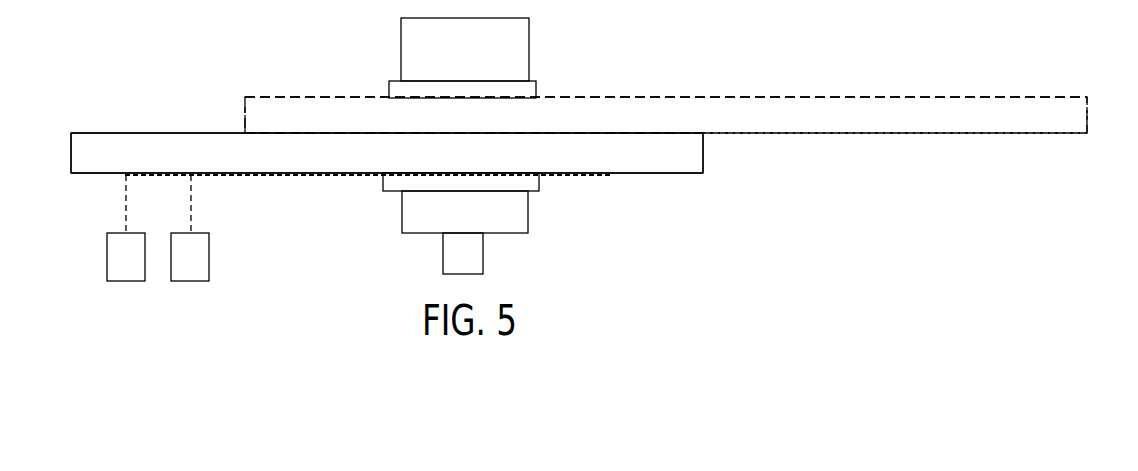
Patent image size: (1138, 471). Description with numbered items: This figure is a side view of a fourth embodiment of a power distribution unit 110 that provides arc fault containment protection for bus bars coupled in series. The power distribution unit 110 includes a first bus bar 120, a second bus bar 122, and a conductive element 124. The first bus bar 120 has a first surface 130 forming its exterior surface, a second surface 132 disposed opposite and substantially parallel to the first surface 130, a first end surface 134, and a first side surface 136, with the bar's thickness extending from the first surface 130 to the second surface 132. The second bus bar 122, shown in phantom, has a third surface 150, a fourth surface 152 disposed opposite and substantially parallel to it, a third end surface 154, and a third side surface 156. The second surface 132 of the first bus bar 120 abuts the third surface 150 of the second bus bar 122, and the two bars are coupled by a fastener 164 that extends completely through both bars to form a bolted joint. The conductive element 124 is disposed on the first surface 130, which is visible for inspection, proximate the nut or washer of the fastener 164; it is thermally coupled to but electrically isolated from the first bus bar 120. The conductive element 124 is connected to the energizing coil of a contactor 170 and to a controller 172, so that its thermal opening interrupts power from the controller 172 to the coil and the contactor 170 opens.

The power distribution unit 110 is at (146, 76).
The first bus bar 120 is at (90, 185).
The second bus bar 122 is at (1013, 97).
The conductive element 124 is at (130, 179).
The first surface 130 is at (112, 178).
The second surface 132 is at (100, 132).
The first end surface 134 is at (704, 170).
The first side surface 136 is at (86, 159).
The third surface 150 is at (910, 134).
The fourth surface 152 is at (880, 96).
The third end surface 154 is at (243, 116).
The third side surface 156 is at (1070, 110).
The fastener 164 is at (530, 38).
The contactor 170 is at (139, 268).
The controller 172 is at (203, 268).